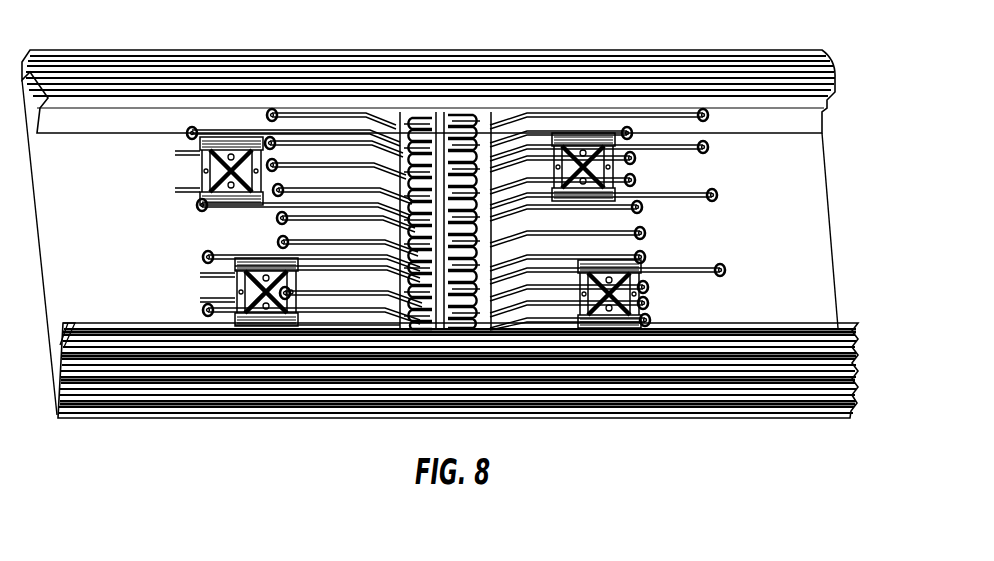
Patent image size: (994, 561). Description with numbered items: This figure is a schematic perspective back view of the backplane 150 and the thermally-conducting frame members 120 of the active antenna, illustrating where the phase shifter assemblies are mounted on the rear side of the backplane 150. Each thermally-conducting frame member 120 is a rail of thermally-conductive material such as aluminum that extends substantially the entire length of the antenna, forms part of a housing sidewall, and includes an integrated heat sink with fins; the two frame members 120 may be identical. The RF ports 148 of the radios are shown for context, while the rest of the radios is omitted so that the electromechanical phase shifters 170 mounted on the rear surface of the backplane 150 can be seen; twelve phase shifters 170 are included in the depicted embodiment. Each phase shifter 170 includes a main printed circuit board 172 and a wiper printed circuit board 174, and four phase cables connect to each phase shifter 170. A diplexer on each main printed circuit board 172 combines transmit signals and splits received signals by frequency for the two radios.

The thermally-conducting frame member 120 is at (68, 410).
The backplane 150 is at (820, 310).
The RF port 148 is at (722, 193).
The electromechanical phase shifter 170 is at (178, 163).
The main printed circuit board 172 is at (203, 260).
The wiper printed circuit board 174 is at (198, 202).